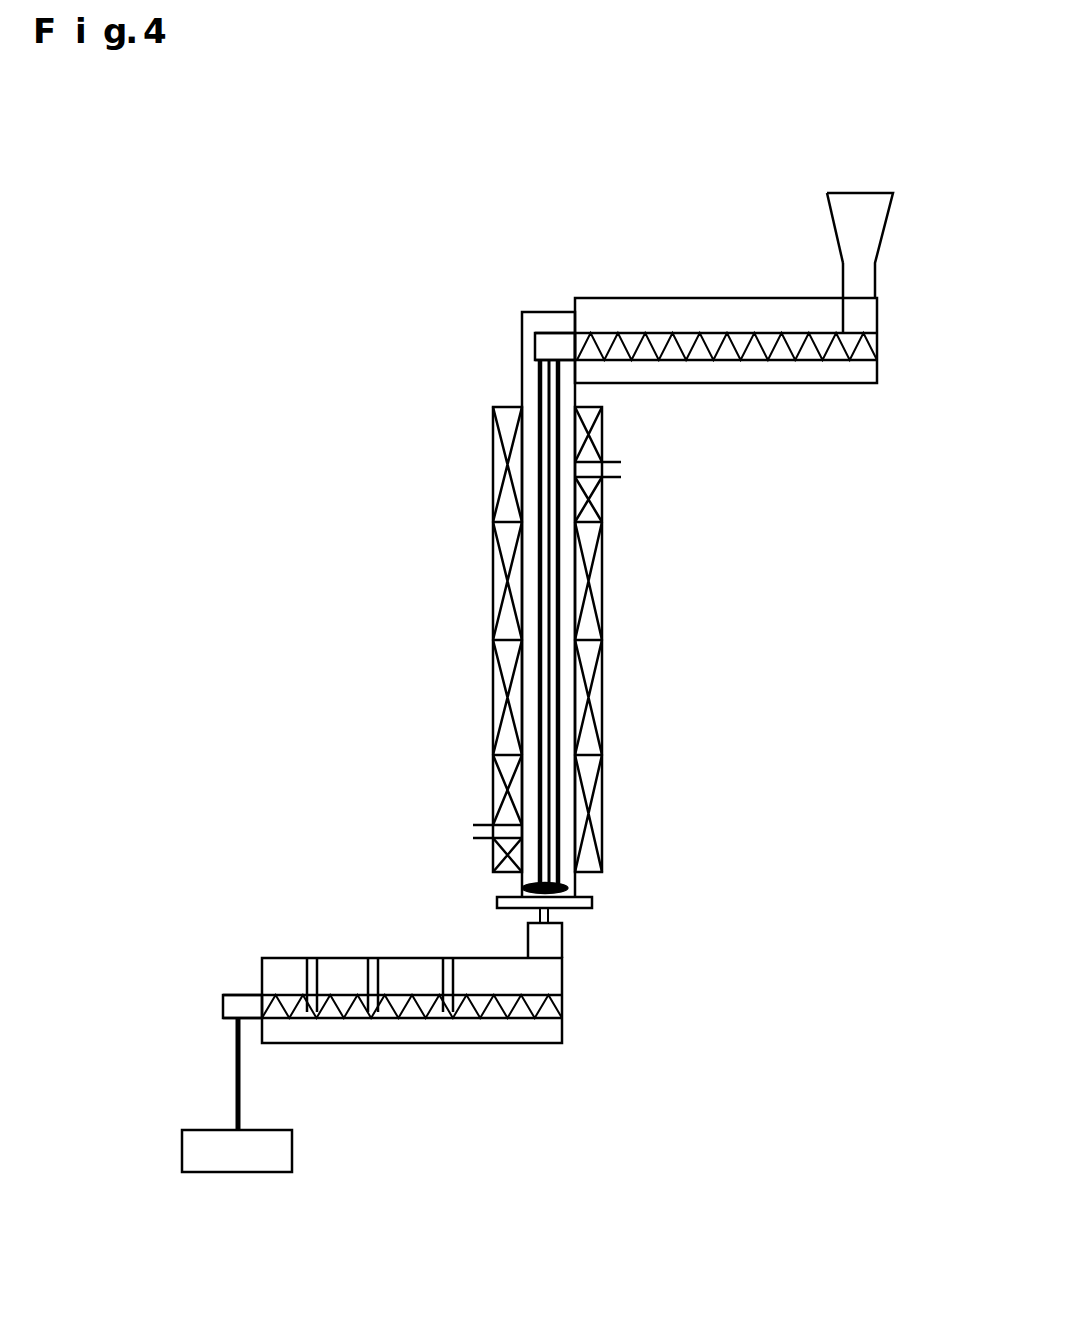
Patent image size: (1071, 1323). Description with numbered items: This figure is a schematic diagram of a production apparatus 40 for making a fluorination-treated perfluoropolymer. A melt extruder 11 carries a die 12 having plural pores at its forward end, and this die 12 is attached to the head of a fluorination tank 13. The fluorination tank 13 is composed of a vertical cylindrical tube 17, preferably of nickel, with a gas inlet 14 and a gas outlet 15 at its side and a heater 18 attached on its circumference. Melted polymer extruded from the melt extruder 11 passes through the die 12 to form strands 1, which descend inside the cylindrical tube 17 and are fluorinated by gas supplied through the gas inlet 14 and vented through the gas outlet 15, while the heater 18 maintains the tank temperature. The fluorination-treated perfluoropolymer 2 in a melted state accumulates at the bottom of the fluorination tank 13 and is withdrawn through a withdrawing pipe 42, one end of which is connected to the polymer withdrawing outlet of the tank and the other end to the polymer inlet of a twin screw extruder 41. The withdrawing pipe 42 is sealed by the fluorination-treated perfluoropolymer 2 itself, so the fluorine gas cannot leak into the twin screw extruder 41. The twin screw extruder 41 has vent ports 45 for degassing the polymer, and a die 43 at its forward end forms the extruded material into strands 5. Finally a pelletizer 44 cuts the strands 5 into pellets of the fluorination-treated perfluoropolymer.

The production apparatus 40 is at (458, 190).
The melt extruder 11 is at (706, 298).
The die 12 is at (545, 330).
The cylindrical tube 17 is at (520, 362).
The strands 1 is at (560, 787).
The fluorination-treated perfluoropolymer 2 is at (565, 877).
The fluorination tank 13 is at (612, 540).
The heater 18 is at (493, 600).
The gas inlet 14 is at (618, 462).
The gas outlet 15 is at (485, 825).
The withdrawing pipe 42 is at (548, 918).
The twin screw extruder 41 is at (465, 1043).
The vent ports 45 is at (312, 958).
The die 43 is at (240, 992).
The strands 5 is at (241, 1088).
The pelletizer 44 is at (197, 1130).